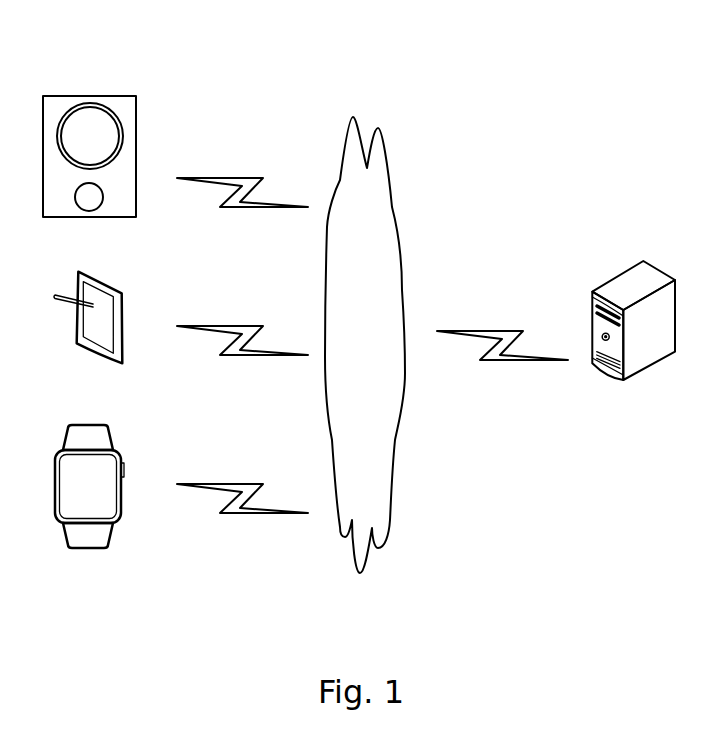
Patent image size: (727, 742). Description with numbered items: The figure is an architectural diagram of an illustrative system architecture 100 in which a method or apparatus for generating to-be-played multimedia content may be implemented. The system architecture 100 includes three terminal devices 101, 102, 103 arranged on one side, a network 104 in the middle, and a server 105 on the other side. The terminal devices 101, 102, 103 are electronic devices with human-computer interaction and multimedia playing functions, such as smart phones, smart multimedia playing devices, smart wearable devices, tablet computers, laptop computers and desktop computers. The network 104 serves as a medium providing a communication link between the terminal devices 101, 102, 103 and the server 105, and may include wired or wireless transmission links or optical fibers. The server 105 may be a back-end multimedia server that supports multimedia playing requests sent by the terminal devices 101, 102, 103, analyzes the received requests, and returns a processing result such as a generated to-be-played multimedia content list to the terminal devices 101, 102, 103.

The system architecture 100 is at (595, 35).
The terminal device 101 is at (89, 171).
The terminal device 102 is at (88, 337).
The terminal device 103 is at (89, 509).
The network 104 is at (365, 345).
The server 105 is at (633, 339).